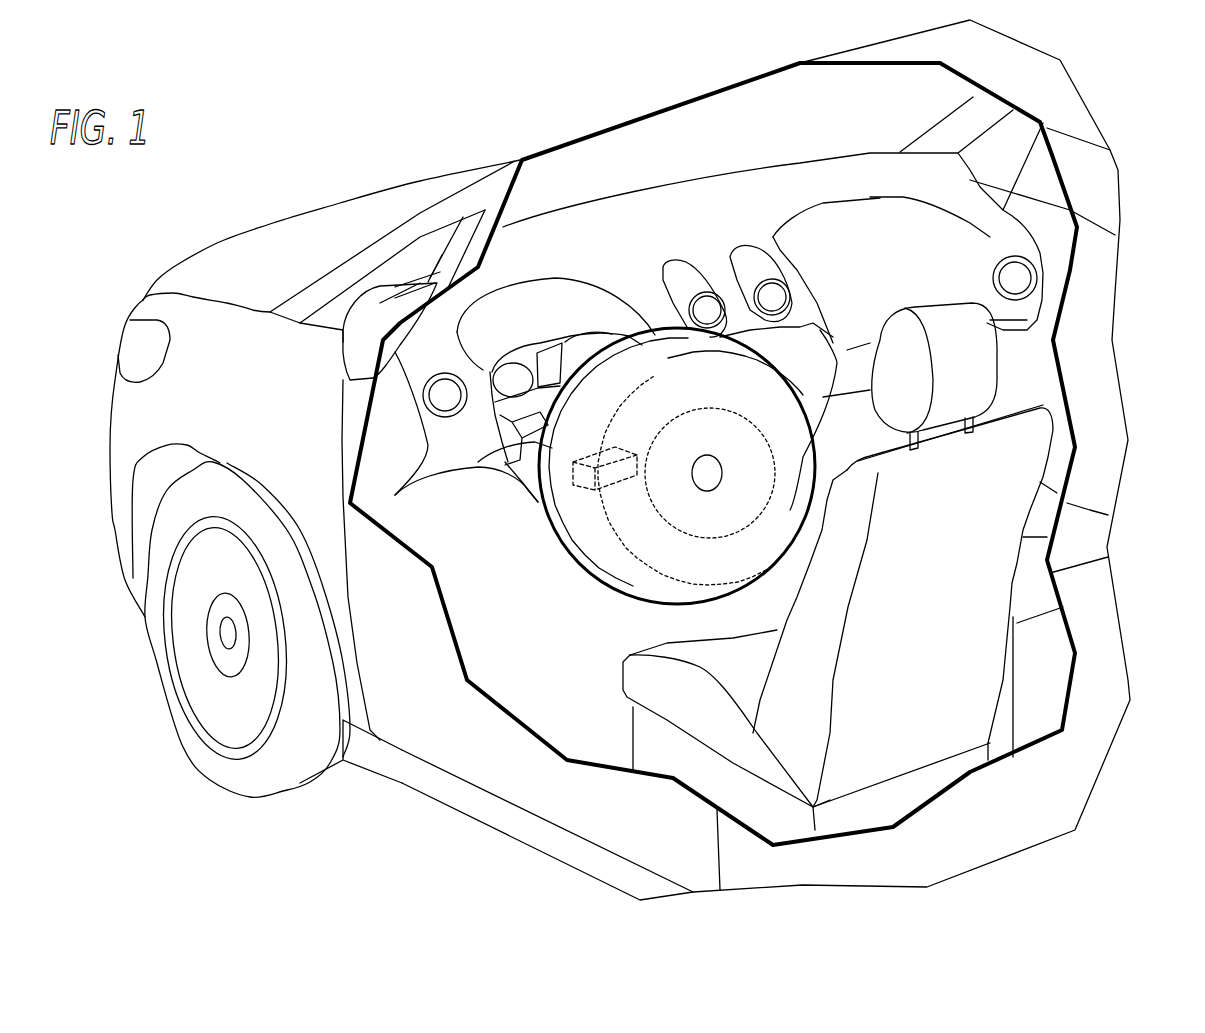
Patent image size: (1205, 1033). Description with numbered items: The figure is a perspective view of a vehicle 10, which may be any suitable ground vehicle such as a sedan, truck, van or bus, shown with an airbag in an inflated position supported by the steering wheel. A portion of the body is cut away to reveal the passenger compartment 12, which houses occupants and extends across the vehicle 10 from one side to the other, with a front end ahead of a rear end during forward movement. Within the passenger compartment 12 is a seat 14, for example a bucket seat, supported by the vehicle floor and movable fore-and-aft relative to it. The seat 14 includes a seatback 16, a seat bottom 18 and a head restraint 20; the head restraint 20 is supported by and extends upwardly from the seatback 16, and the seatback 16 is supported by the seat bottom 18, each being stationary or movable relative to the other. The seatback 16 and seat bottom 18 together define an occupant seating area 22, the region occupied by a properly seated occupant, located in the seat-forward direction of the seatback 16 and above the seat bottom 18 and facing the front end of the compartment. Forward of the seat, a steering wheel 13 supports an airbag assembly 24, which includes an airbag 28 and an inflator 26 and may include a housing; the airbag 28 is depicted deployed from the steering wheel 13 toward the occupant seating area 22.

The vehicle 10 is at (383, 147).
The passenger compartment 12 is at (497, 636).
The steering wheel 13 is at (538, 465).
The seat 14 is at (967, 593).
The seatback 16 is at (977, 525).
The seat bottom 18 is at (640, 687).
The head restraint 20 is at (975, 388).
The occupant seating area 22 is at (783, 597).
The airbag assembly 24 is at (668, 375).
The inflator 26 is at (572, 478).
The airbag 28 is at (599, 538).